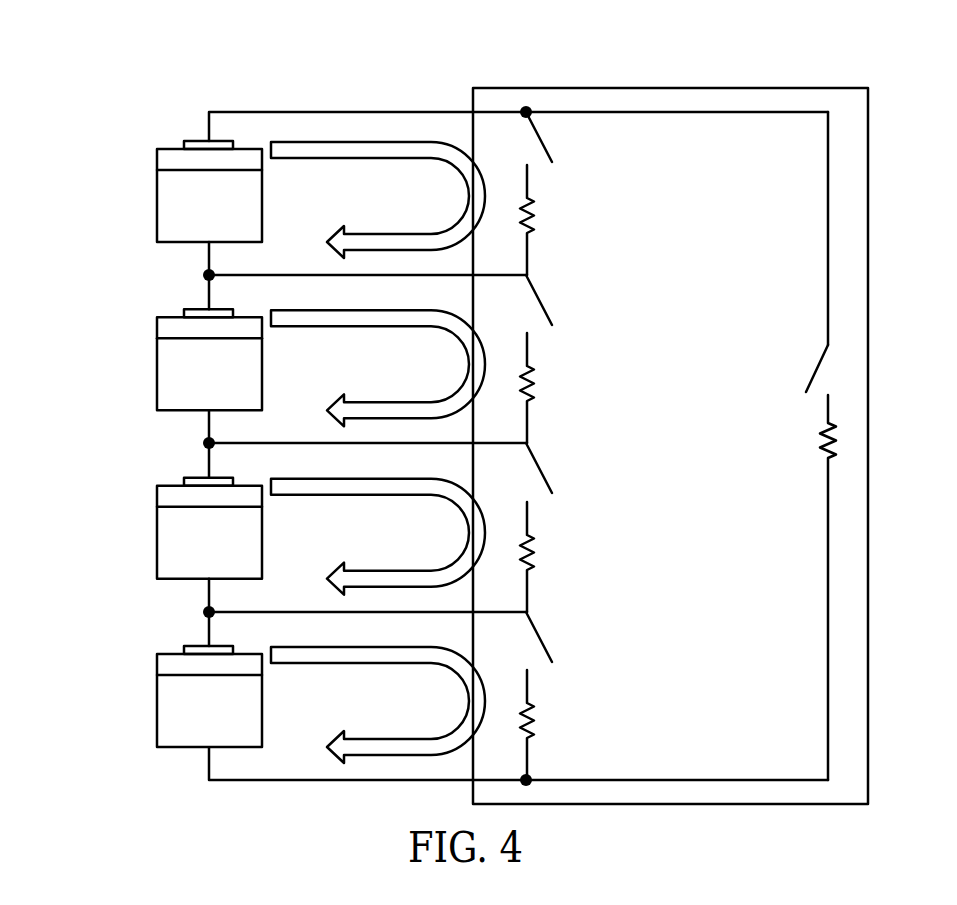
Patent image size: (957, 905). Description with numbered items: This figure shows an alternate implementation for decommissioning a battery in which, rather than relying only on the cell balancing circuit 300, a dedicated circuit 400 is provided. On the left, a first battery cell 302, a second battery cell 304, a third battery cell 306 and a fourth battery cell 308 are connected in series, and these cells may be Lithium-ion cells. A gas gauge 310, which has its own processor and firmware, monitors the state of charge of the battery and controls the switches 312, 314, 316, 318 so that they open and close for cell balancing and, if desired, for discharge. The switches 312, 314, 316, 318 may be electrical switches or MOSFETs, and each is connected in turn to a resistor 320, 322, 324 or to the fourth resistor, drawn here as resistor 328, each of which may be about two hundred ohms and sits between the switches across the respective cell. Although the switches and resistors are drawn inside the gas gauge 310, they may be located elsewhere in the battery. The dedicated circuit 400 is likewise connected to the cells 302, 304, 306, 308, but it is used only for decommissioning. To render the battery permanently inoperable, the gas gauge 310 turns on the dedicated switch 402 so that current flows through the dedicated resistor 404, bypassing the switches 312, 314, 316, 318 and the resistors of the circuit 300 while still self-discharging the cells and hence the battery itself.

The circuit 300 is at (151, 41).
The first battery cell 302 is at (157, 696).
The second battery cell 304 is at (157, 528).
The third battery cell 306 is at (157, 359).
The fourth battery cell 308 is at (157, 195).
The gas gauge 310 is at (676, 88).
The switch 312 is at (549, 148).
The switch 314 is at (544, 311).
The switch 316 is at (544, 479).
The switch 318 is at (544, 648).
The resistor 320 is at (529, 200).
The resistor 322 is at (529, 368).
The resistor 324 is at (529, 537).
The balancing resistor 328 is at (529, 705).
The dedicated circuit 400 is at (828, 208).
The pack switch 402 is at (815, 372).
The dedicated resistor 404 is at (824, 434).